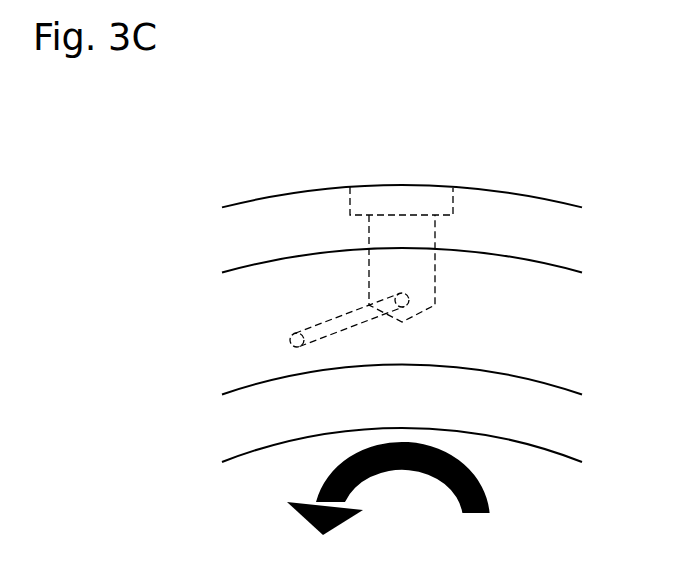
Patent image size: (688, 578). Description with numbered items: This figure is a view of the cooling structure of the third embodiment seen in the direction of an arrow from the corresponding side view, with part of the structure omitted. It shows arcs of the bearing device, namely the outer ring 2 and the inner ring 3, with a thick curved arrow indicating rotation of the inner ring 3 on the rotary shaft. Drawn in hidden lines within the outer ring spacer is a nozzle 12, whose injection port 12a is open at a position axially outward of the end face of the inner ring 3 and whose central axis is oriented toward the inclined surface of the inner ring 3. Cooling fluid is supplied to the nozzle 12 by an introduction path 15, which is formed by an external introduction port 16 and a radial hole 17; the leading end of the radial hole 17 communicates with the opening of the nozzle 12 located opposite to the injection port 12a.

The outer ring 2 is at (508, 205).
The inner ring 3 is at (515, 428).
The nozzle 12 is at (316, 230).
The injection port 12a is at (292, 334).
The introduction path 15 is at (406, 186).
The external introduction port 16 is at (350, 203).
The radial hole 17 is at (370, 270).